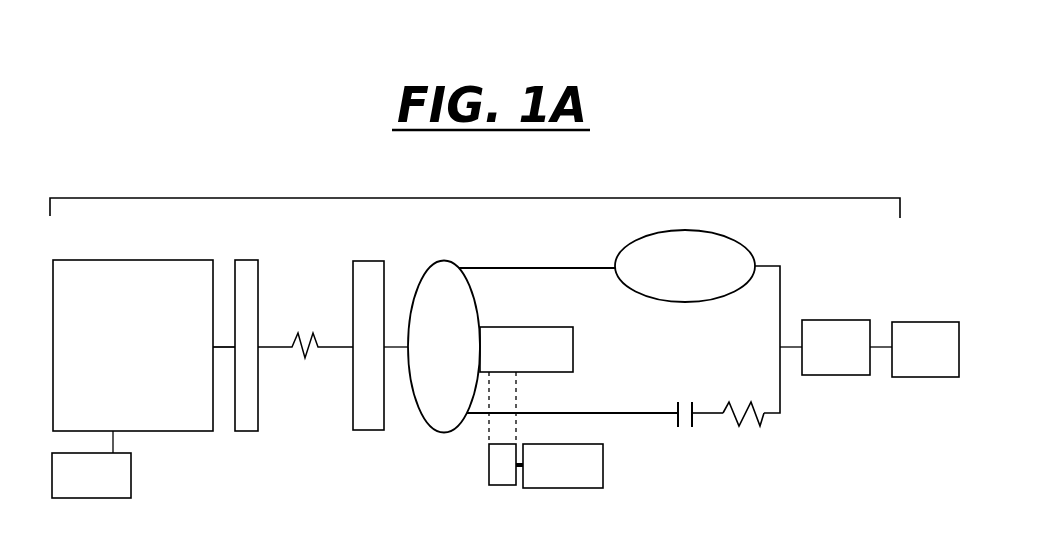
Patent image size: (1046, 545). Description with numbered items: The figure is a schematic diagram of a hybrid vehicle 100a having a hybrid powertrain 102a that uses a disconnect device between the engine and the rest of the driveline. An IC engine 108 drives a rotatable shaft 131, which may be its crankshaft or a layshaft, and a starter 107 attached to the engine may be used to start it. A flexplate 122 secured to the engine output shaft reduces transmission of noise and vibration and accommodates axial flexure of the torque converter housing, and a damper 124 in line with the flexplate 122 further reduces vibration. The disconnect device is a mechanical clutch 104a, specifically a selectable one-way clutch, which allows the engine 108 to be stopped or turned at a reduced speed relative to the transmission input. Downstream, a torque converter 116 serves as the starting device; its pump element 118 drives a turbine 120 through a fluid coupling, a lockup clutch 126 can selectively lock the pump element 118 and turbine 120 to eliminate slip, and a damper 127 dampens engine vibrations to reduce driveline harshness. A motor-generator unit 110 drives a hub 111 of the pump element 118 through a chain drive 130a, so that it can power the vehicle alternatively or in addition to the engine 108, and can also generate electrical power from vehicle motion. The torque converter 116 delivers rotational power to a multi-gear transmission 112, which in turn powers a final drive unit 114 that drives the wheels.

The hybrid vehicle 100a is at (206, 160).
The hybrid powertrain 102a is at (408, 197).
The mechanical clutch 104a is at (373, 425).
The starter 107 is at (110, 494).
The IC engine 108 is at (112, 359).
The motor-generator unit 110 is at (545, 481).
The hub 111 is at (544, 361).
The multi-gear transmission 112 is at (818, 361).
The final drive unit 114 is at (907, 361).
The torque converter 116 is at (622, 251).
The pump element 118 is at (420, 360).
The turbine 120 is at (666, 278).
The flexplate 122 is at (243, 428).
The damper 124 is at (293, 353).
The lockup clutch 126 is at (693, 419).
The damper 127 is at (772, 429).
The chain drive 130a is at (481, 438).
The rotatable shaft 131 is at (222, 333).